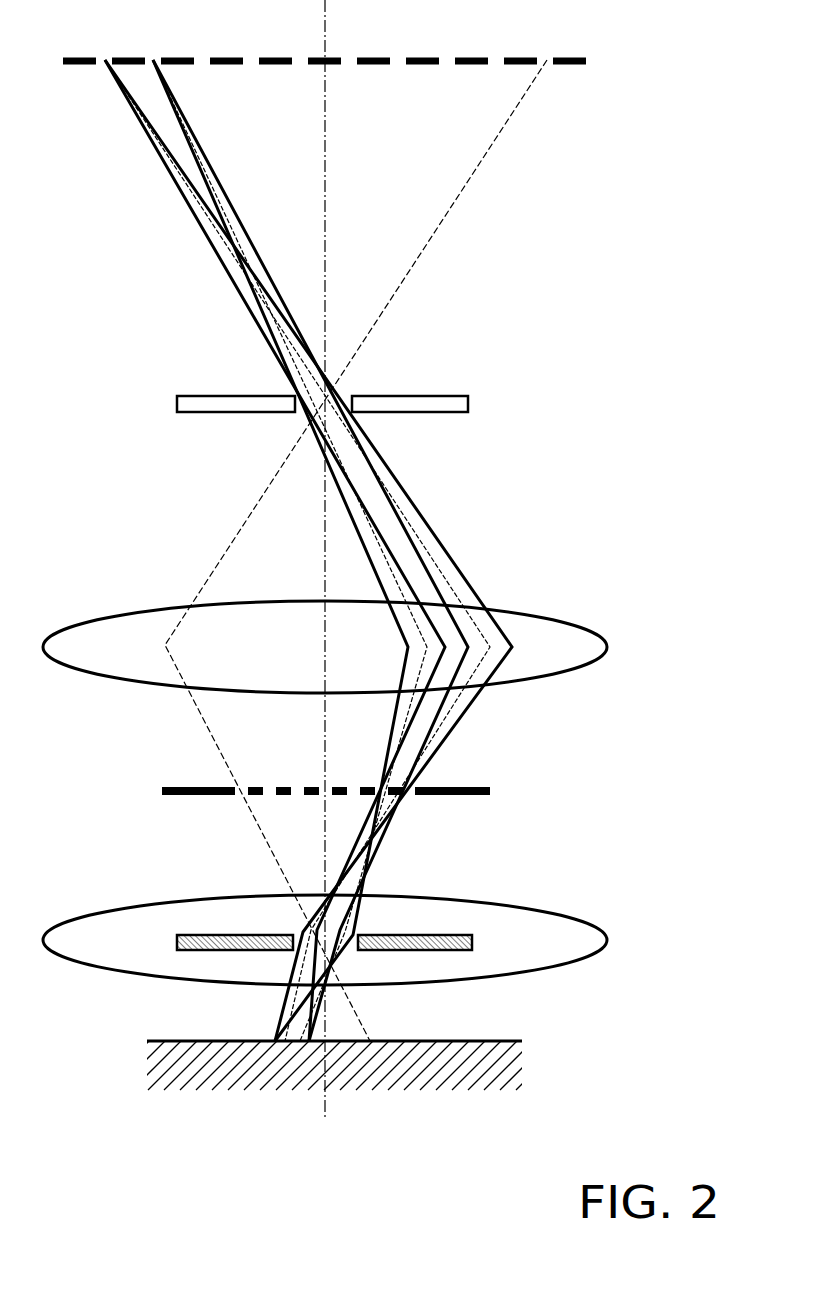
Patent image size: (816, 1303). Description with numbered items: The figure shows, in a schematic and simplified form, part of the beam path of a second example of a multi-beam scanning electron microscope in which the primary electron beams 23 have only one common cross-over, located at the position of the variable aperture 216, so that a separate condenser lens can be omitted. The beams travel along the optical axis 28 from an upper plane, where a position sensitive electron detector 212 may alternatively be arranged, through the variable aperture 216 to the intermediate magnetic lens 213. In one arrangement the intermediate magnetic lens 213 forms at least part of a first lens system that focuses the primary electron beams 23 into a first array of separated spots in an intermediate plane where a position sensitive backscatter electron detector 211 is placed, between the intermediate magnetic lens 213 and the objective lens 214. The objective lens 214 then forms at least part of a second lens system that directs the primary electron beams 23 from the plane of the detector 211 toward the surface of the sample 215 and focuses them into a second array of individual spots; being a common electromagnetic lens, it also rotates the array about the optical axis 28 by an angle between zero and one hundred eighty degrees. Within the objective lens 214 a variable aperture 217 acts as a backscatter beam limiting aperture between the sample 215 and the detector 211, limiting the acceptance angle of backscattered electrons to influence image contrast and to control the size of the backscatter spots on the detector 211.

The optical axis 28 is at (325, 28).
The position sensitive electron detector 212 is at (587, 64).
The primary electron beams 23 is at (380, 538).
The variable aperture 216 is at (468, 404).
The intermediate magnetic lens 213 is at (605, 647).
The position sensitive backscatter electron detector 211 is at (490, 788).
The objective lens 214 is at (605, 943).
The variable aperture 217 is at (177, 941).
The sample 215 is at (505, 1040).